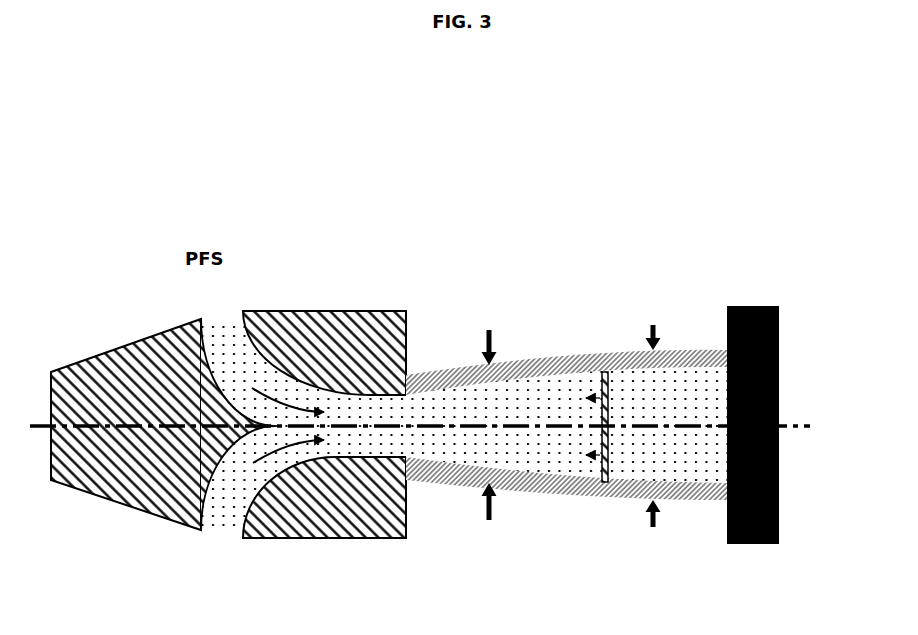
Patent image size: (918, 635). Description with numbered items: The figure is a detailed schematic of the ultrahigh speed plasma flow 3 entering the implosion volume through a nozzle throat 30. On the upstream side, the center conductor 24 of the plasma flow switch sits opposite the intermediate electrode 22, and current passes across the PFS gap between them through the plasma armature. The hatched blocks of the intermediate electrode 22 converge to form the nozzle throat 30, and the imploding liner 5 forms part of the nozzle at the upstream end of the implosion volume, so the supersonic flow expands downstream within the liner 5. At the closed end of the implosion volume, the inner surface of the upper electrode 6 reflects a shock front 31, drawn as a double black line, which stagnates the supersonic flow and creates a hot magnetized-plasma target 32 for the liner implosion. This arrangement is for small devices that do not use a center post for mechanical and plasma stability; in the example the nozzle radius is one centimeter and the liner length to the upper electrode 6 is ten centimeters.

The ultrahigh speed plasma flow 3 is at (237, 502).
The liner 5 is at (572, 497).
The upper electrode 6 is at (782, 381).
The intermediate electrode 22 is at (342, 308).
The center conductor 24 is at (109, 344).
The nozzle throat 30 is at (377, 464).
The reflected shock front 31 is at (603, 375).
The hot magnetized-plasma target 32 is at (696, 386).